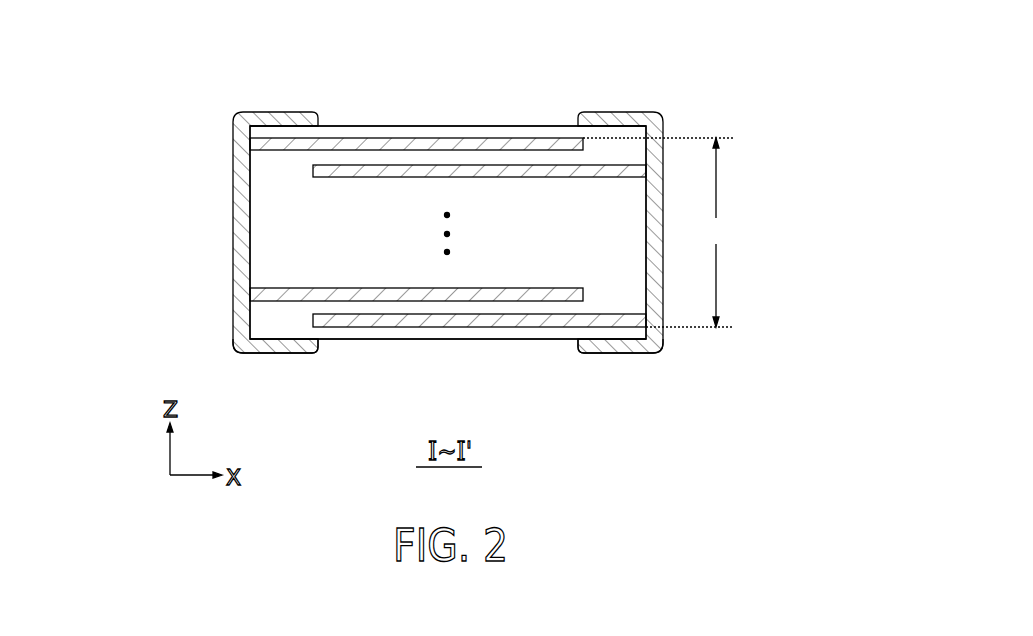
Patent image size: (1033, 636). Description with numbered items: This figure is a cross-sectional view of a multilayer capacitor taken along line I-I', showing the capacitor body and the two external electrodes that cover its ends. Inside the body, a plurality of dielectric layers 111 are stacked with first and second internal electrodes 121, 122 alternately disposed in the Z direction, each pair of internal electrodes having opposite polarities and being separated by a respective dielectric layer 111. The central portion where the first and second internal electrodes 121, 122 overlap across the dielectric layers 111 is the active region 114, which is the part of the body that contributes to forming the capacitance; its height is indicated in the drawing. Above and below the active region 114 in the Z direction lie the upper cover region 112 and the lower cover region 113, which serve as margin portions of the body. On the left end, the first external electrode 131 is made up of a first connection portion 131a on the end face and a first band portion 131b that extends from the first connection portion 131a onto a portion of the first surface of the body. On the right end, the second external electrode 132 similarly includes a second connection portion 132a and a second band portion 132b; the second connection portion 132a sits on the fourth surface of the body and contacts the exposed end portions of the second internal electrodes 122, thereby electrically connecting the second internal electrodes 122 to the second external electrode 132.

The dielectric layer 111 is at (517, 310).
The upper cover region 112 is at (453, 133).
The lower cover region 113 is at (457, 334).
The active region 114 is at (660, 232).
The first internal electrode 121 is at (292, 147).
The second internal electrode 122 is at (560, 318).
The first external electrode 131 is at (199, 232).
The first connection portion 131a is at (236, 247).
The first band portion 131b is at (282, 347).
The second external electrode 132 is at (697, 284).
The second connection portion 132a is at (658, 275).
The second band portion 132b is at (620, 343).